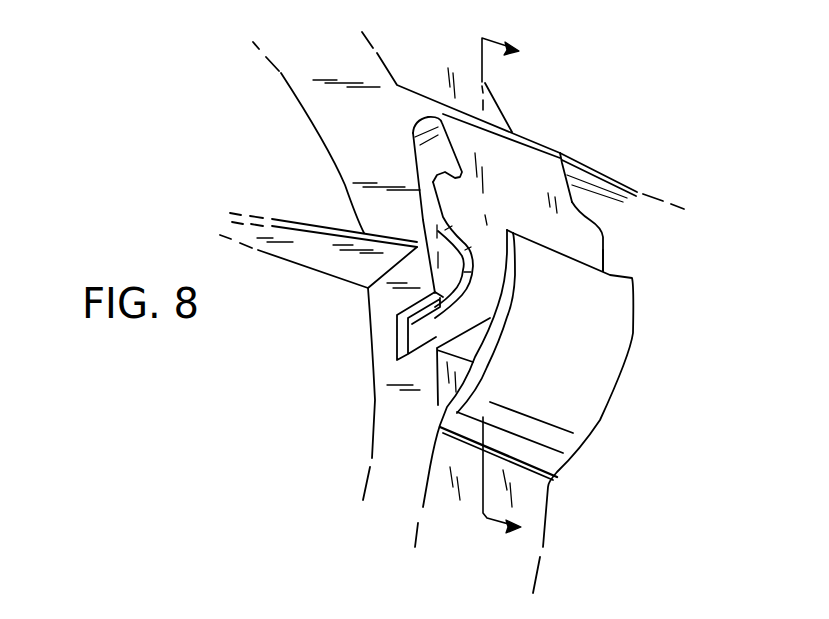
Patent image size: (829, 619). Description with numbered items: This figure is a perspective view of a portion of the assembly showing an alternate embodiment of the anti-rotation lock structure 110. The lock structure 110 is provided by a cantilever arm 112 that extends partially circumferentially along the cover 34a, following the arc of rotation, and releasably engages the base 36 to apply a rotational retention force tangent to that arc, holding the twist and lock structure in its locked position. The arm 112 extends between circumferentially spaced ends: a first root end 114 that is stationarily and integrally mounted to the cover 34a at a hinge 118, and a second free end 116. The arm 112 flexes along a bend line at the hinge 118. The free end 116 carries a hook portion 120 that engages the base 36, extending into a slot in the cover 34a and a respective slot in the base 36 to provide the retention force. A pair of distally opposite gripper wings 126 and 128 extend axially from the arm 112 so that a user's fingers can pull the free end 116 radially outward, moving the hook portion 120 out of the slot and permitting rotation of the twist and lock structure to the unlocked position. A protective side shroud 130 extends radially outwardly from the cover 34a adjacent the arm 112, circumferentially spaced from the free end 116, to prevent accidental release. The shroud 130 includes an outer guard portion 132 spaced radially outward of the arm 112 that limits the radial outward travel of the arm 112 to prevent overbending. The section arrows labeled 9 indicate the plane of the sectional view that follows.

The cover 34a is at (311, 118).
The base 36 is at (655, 193).
The section line 9- 9 is at (510, 293).
The anti-rotation lock structure 110 is at (582, 199).
The cantilever arm 112 is at (573, 203).
The first root end 114 is at (560, 153).
The second free end 116 is at (473, 268).
The hinge 118 is at (418, 98).
The hook portion 120 is at (410, 330).
The gripper wing 126 is at (438, 203).
The gripper wing 128 is at (604, 253).
The protective side shroud 130 is at (628, 338).
The outer guard portion 132 is at (508, 233).